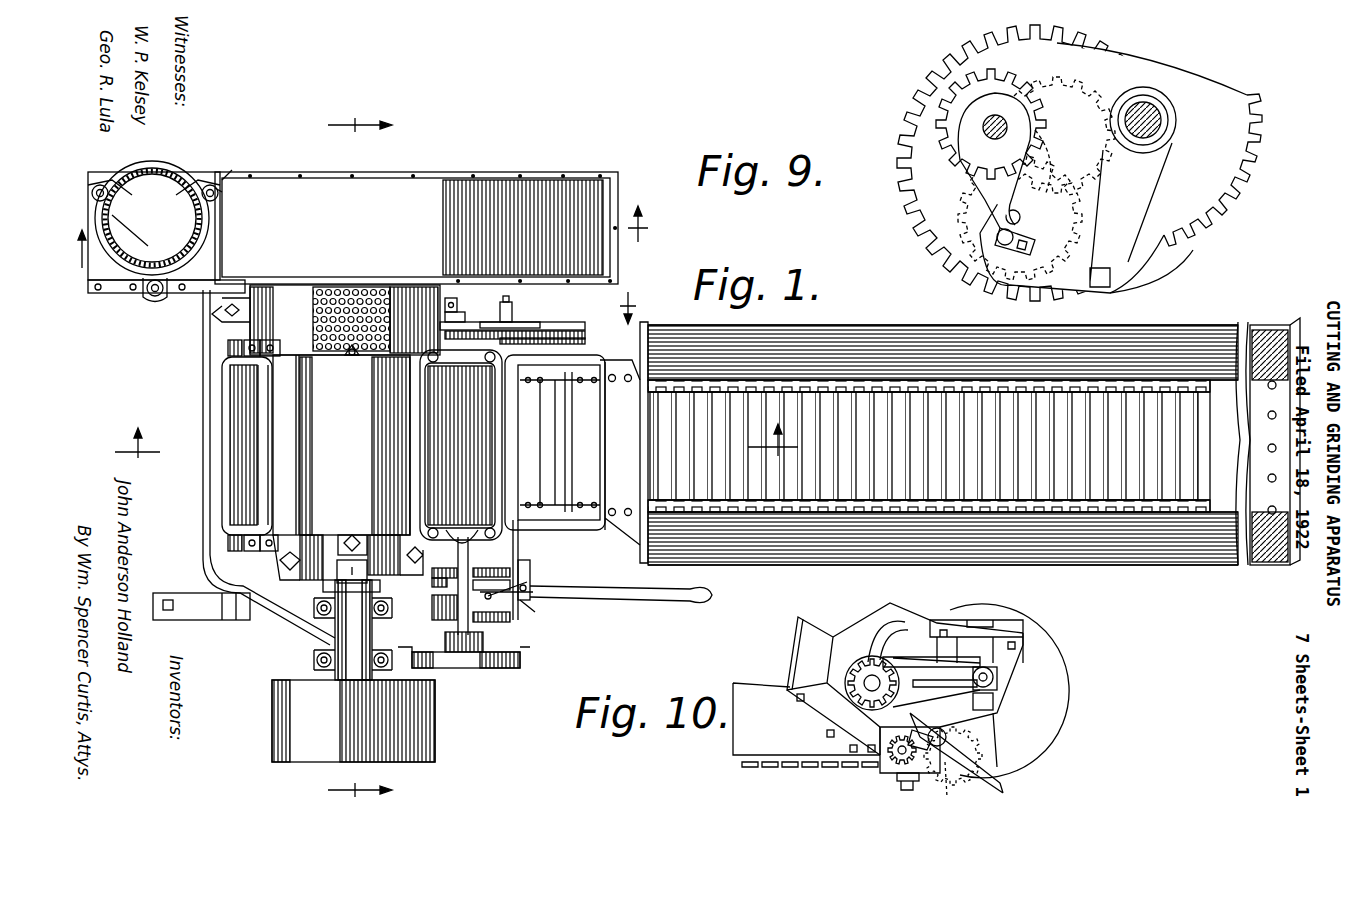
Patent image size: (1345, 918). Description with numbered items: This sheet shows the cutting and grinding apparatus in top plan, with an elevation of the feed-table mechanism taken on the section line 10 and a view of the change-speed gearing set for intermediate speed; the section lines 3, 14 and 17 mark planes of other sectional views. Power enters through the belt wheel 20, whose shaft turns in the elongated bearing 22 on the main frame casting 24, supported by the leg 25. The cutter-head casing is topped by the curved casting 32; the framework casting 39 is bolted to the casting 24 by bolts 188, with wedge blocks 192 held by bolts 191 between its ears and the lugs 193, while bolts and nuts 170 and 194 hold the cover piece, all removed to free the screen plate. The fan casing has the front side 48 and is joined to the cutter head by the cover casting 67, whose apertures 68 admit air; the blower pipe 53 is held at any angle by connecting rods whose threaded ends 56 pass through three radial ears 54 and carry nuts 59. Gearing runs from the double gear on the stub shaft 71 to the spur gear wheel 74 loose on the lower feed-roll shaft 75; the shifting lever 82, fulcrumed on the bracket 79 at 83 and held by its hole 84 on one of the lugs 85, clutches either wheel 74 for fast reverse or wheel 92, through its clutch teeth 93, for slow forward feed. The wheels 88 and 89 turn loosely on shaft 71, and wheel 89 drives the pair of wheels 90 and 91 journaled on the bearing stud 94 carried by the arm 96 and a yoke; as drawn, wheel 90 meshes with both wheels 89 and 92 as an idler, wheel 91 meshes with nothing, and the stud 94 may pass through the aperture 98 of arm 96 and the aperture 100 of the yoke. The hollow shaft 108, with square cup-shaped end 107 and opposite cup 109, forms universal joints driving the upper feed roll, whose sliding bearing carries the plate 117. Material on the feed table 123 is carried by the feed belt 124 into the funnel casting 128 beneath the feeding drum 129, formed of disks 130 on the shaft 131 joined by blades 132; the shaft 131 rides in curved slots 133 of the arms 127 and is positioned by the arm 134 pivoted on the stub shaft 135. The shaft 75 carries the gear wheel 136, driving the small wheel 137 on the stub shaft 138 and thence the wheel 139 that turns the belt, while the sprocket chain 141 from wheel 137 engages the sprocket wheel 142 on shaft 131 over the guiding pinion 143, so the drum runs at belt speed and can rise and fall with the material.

In FIG. 1, the section line 3 is at (449, 450).
In FIG. 1, the section line 10 is at (639, 308).
In FIG. 1, the section line 14 is at (360, 454).
In FIG. 1, the section line 17 is at (367, 237).
In FIG. 1, the belt wheel 20 is at (420, 720).
In FIG. 1, the elongated bearing 22 is at (348, 628).
In FIG. 1, the main frame casting 24 is at (269, 600).
In FIG. 1, the leg 25 is at (190, 598).
In FIG. 1, the curved casting 32 is at (348, 473).
In FIG. 1, the casting 39 is at (242, 466).
In FIG. 1, the front side 48 is at (489, 182).
In FIG. 1, the blower pipe 53 is at (216, 168).
In FIG. 1, the radial projections or ears 54 is at (202, 183).
In FIG. 1, the threaded upturned end 56 is at (189, 203).
In FIG. 1, the nuts 59 is at (222, 188).
In FIG. 1, the cover casting 67 is at (298, 286).
In FIG. 1, the apertures 68 is at (366, 288).
In FIG. 9, the stub shaft 71 is at (998, 115).
In FIG. 1, the spur gear wheel 74 is at (491, 567).
In FIG. 9, the shaft 75 is at (1168, 122).
In FIG. 10, the shaft 75 is at (950, 782).
In FIG. 1, the bracket 79 is at (475, 665).
In FIG. 1, the shifting lever 82 is at (618, 598).
In FIG. 1, the fulcrum 83 is at (494, 597).
In FIG. 1, the hole 84 is at (519, 603).
In FIG. 1, the lugs 85 is at (526, 588).
In FIG. 9, the larger spur gear wheel 88 is at (922, 103).
In FIG. 9, the smaller spur gear wheel 89 is at (985, 88).
In FIG. 9, the larger spur gear wheel 90 is at (945, 225).
In FIG. 9, the smaller spur gear wheel 91 is at (1026, 244).
In FIG. 1, the larger spur gear wheel 92 is at (495, 628).
In FIG. 9, the larger spur gear wheel 92 is at (1131, 163).
In FIG. 9, the clutch teeth 93 is at (1165, 90).
In FIG. 9, the bearing stud 94 is at (996, 237).
In FIG. 9, the arm 96 is at (958, 160).
In FIG. 9, the aperture 98 is at (1010, 210).
In FIG. 9, the aperture 100 is at (1020, 216).
In FIG. 1, the cup-shaped end 107 is at (442, 632).
In FIG. 1, the hollow shaft 108 is at (440, 616).
In FIG. 1, the cup-shaped portion 109 is at (462, 540).
In FIG. 1, the plate 117 is at (462, 368).
In FIG. 1, the feed table 123 is at (855, 316).
In FIG. 10, the feed table 123 is at (748, 732).
In FIG. 1, the feed belt 124 is at (900, 405).
In FIG. 10, the feed belt 124 is at (800, 768).
In FIG. 1, the arms 127 is at (608, 360).
In FIG. 10, the arms 127 is at (798, 632).
In FIG. 1, the casting 128 is at (574, 442).
In FIG. 1, the feeding drum 129 is at (590, 474).
In FIG. 1, the disks 130 is at (585, 375).
In FIG. 10, the shaft 131 is at (866, 680).
In FIG. 1, the blades 132 is at (570, 422).
In FIG. 10, the curved slots 133 is at (885, 645).
In FIG. 1, the arm 134 is at (526, 320).
In FIG. 10, the arm 134 is at (910, 690).
In FIG. 1, the stub shaft 135 is at (470, 326).
In FIG. 10, the stub shaft 135 is at (998, 675).
In FIG. 1, the spur gear wheel 136 is at (552, 338).
In FIG. 10, the spur gear wheel 136 is at (1002, 790).
In FIG. 1, the small spur gear wheel 137 is at (525, 322).
In FIG. 10, the small spur gear wheel 137 is at (905, 766).
In FIG. 1, the stub shaft 138 is at (512, 304).
In FIG. 10, the stub shaft 138 is at (905, 770).
In FIG. 10, the spur gear wheel 139 is at (897, 770).
In FIG. 1, the sprocket chain 141 is at (462, 310).
In FIG. 10, the sprocket chain 141 is at (868, 648).
In FIG. 10, the sprocket wheel 142 is at (860, 697).
In FIG. 10, the guiding sprocket pinion 143 is at (1002, 688).
In FIG. 1, the bolts and nuts 170 is at (354, 530).
In FIG. 1, the bolts 188 is at (272, 340).
In FIG. 1, the bolts 191 is at (248, 546).
In FIG. 1, the wedge blocks 192 is at (244, 350).
In FIG. 1, the lugs 193 is at (228, 344).
In FIG. 1, the bolts and nuts 194 is at (352, 356).